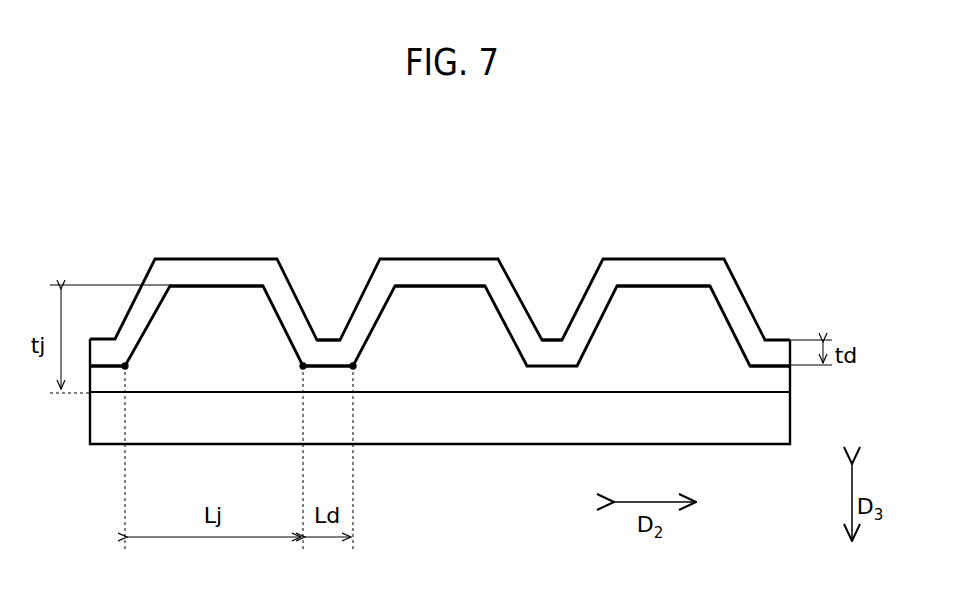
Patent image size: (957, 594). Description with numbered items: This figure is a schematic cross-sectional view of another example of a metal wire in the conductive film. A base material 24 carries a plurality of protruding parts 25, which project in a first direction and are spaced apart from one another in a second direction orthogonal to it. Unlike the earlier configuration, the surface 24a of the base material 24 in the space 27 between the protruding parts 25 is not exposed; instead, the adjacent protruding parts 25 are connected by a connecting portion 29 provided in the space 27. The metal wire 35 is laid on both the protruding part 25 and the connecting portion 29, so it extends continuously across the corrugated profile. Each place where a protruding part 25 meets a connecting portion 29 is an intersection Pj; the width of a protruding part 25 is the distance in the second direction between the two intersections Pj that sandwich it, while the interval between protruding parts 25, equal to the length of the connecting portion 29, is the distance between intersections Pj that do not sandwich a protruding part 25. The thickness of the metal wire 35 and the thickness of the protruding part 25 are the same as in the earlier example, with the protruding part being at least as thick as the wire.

The base material 24 is at (780, 418).
The surface of the base material 24a is at (762, 384).
The protruding part 25 is at (217, 298).
The space 27 is at (330, 336).
The connecting portion 29 is at (110, 383).
The metal wire 35 is at (395, 276).
The intersection Pj is at (128, 368).